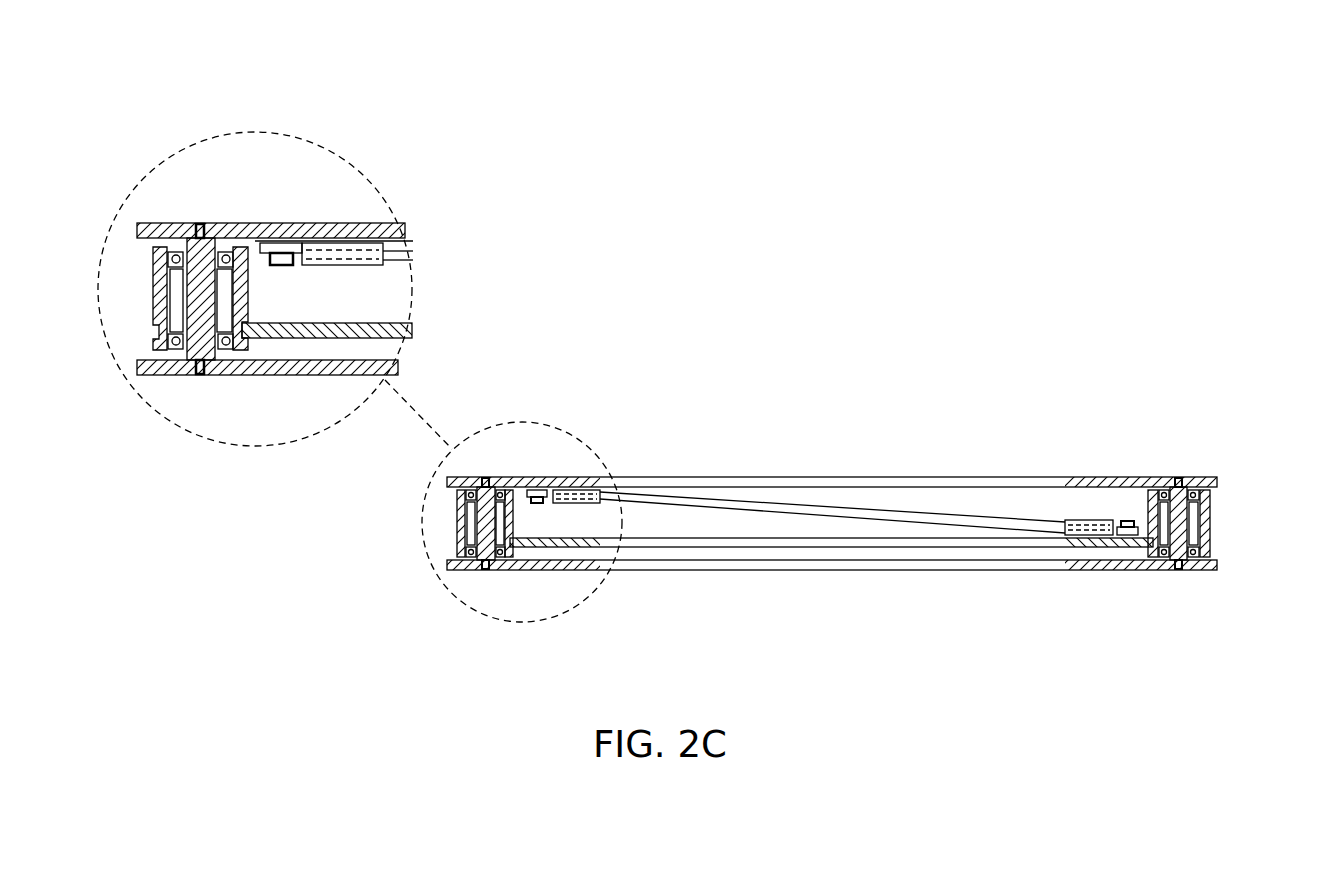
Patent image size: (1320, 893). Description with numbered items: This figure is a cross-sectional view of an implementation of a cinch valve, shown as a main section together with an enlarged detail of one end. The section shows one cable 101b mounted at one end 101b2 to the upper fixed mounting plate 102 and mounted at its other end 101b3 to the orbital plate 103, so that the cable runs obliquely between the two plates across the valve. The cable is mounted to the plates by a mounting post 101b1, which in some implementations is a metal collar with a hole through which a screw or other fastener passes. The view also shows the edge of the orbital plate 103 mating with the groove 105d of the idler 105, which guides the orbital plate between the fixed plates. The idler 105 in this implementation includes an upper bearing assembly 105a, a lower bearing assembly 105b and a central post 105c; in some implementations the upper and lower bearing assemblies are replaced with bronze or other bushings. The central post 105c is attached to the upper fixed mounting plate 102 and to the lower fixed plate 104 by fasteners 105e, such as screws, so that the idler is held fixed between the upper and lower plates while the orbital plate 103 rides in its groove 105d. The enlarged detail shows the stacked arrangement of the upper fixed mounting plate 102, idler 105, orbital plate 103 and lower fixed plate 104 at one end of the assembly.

The upper fixed mounting plate 102 is at (180, 223).
The orbital plate 103 is at (388, 322).
The lower fixed plate 104 is at (898, 560).
The idler 105 is at (152, 275).
The upper bearing assembly 105a is at (167, 223).
The lower bearing assembly 105b is at (205, 362).
The central post 105c is at (160, 313).
The groove 105d is at (247, 310).
The fasteners 105e is at (200, 225).
The cable 101b is at (366, 255).
The mounting post 101b1 is at (280, 226).
The cable end mounted to the upper fixed mounting plate 101b2 is at (578, 490).
The cable end mounted to the orbital plate 101b3 is at (1088, 520).